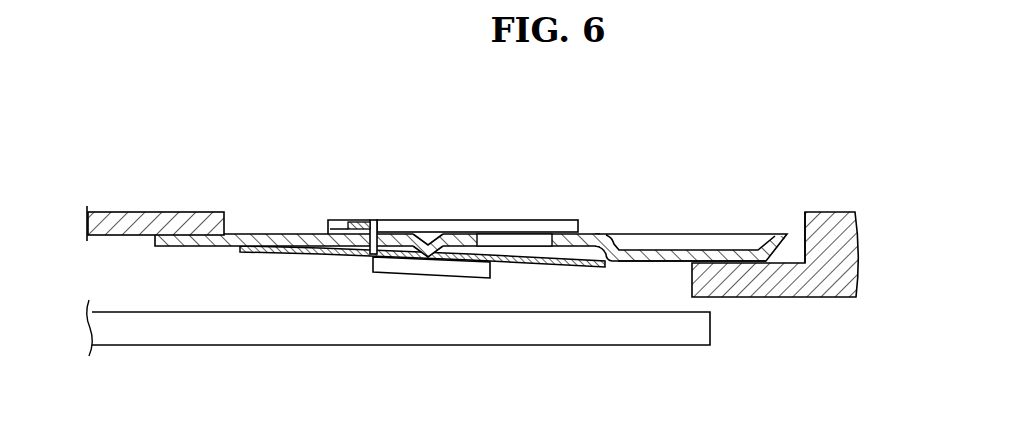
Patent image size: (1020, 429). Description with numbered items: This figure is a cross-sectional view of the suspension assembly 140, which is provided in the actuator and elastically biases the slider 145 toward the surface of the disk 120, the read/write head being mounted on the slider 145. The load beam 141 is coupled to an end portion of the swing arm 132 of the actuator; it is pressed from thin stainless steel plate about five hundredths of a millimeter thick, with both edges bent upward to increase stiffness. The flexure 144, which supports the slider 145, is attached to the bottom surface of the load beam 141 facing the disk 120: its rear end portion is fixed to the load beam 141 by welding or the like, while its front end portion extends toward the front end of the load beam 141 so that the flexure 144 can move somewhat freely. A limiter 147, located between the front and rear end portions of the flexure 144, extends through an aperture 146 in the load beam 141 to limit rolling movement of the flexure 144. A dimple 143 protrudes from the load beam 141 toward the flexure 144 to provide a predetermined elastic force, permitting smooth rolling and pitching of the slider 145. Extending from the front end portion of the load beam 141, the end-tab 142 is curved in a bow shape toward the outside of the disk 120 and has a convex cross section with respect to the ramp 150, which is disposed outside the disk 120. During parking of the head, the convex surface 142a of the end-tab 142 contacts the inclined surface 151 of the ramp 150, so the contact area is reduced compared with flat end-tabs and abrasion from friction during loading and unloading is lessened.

The disk 120 is at (343, 330).
The swing arm 132 is at (162, 212).
The suspension assembly 140 is at (471, 239).
The load beam 141 is at (285, 234).
The end-tab 142 is at (672, 250).
The convex surface 142a is at (685, 262).
The dimple 143 is at (430, 243).
The flexure 144 is at (328, 253).
The slider 145 is at (427, 271).
The aperture 146 is at (390, 220).
The limiter 147 is at (363, 220).
The ramp 150 is at (824, 286).
The inclined surface 151 is at (797, 262).